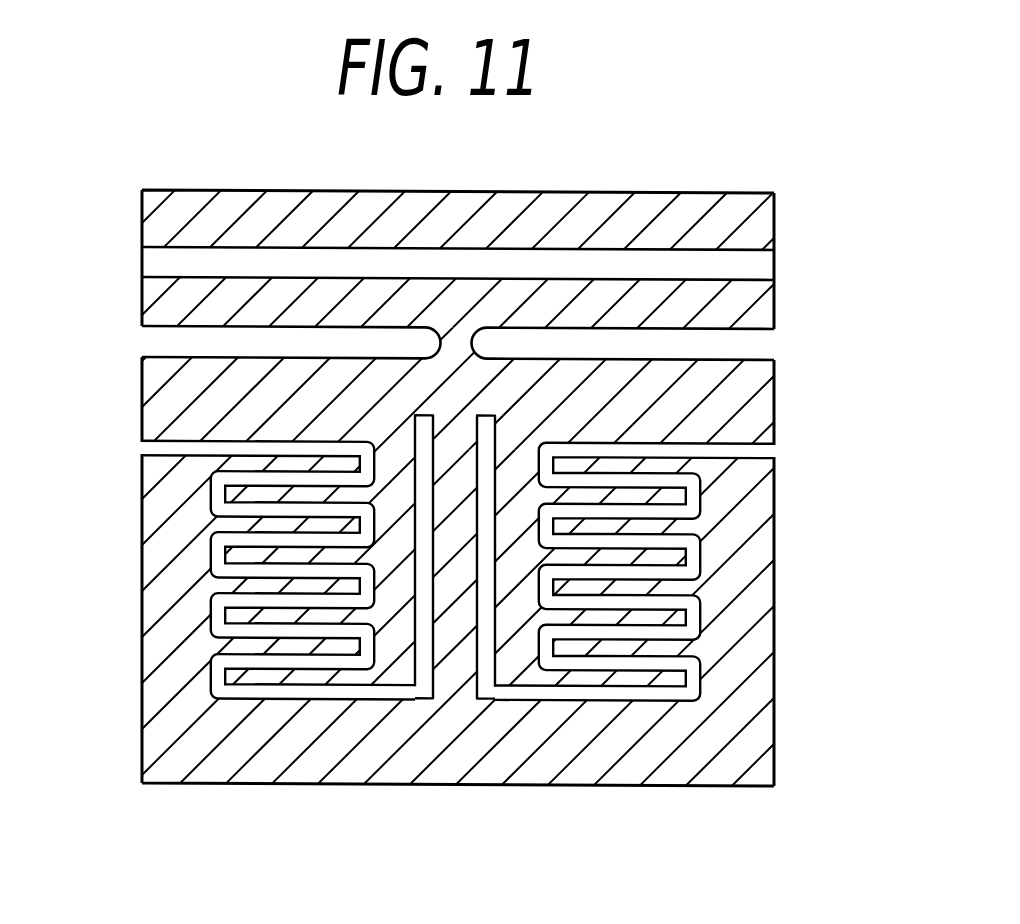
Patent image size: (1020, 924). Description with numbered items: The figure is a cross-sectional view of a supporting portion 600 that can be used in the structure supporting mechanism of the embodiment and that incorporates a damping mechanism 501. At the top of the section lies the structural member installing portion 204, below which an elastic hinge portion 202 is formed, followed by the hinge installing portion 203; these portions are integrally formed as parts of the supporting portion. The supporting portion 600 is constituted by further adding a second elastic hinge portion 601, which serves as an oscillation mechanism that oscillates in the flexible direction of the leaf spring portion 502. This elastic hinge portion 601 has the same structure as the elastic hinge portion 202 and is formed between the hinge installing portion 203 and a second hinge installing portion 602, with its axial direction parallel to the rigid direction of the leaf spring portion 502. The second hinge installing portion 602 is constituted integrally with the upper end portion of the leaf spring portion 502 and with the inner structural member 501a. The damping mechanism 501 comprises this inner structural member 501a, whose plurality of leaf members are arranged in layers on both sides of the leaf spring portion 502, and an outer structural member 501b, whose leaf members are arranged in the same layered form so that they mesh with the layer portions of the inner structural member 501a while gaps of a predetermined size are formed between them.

The supporting portion 600 is at (118, 191).
The structural member installing portion 204 is at (712, 198).
The elastic hinge portion 202 is at (758, 268).
The hinge installing portion 203 is at (760, 310).
The elastic hinge portion 601 is at (443, 347).
The second hinge installing portion 602 is at (763, 395).
The leaf spring portion 502 is at (456, 668).
The inner structural member 501a is at (563, 683).
The outer structural member 501b is at (695, 763).
The damping mechanism 501 is at (742, 859).